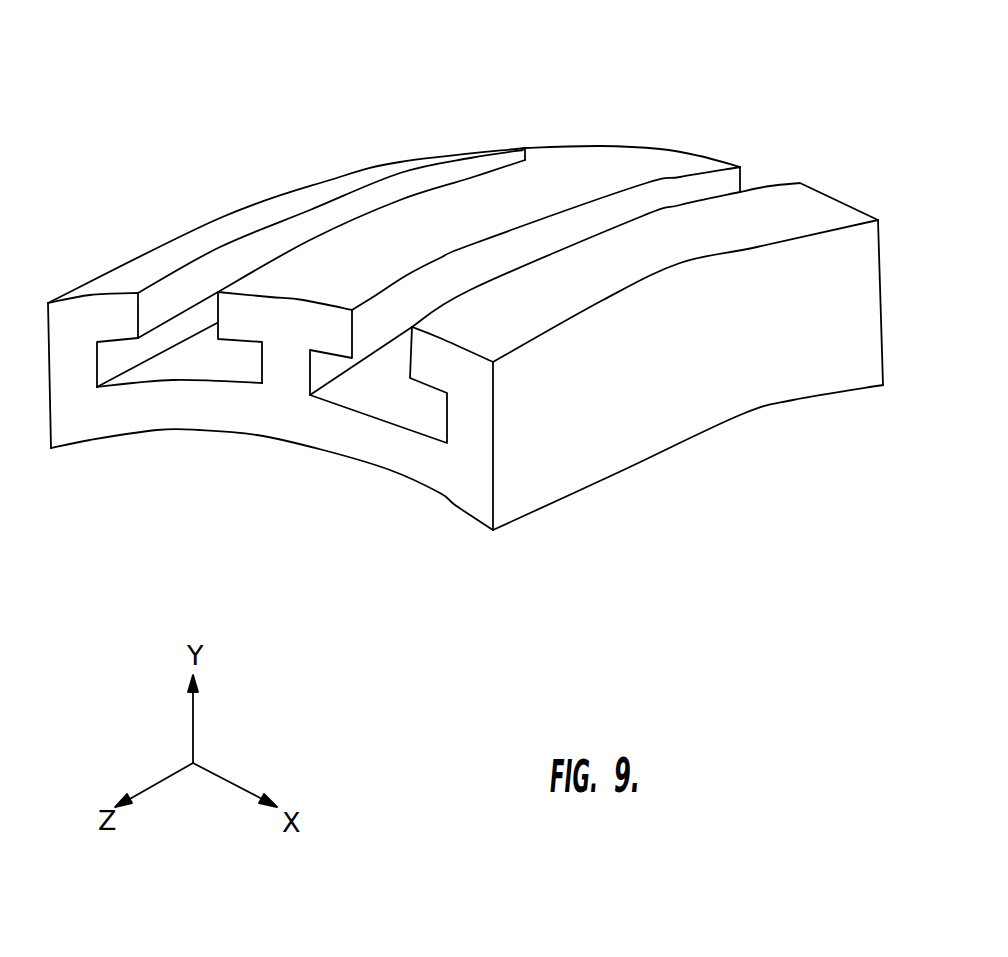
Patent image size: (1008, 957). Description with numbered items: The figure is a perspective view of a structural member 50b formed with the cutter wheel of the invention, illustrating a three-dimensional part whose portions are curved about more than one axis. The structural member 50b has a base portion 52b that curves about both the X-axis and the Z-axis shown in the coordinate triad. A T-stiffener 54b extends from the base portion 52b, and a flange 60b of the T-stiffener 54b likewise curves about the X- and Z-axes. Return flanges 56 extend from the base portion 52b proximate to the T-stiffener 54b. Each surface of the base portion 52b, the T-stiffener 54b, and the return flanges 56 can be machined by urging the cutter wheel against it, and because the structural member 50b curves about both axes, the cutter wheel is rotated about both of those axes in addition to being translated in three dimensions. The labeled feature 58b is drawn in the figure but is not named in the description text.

The structural member 50b is at (147, 90).
The base portion 52b is at (455, 507).
The T-stiffener 54b is at (680, 153).
The return flanges 56 is at (73, 300).
The tongue 58b is at (258, 382).
The flange 60b is at (218, 323).